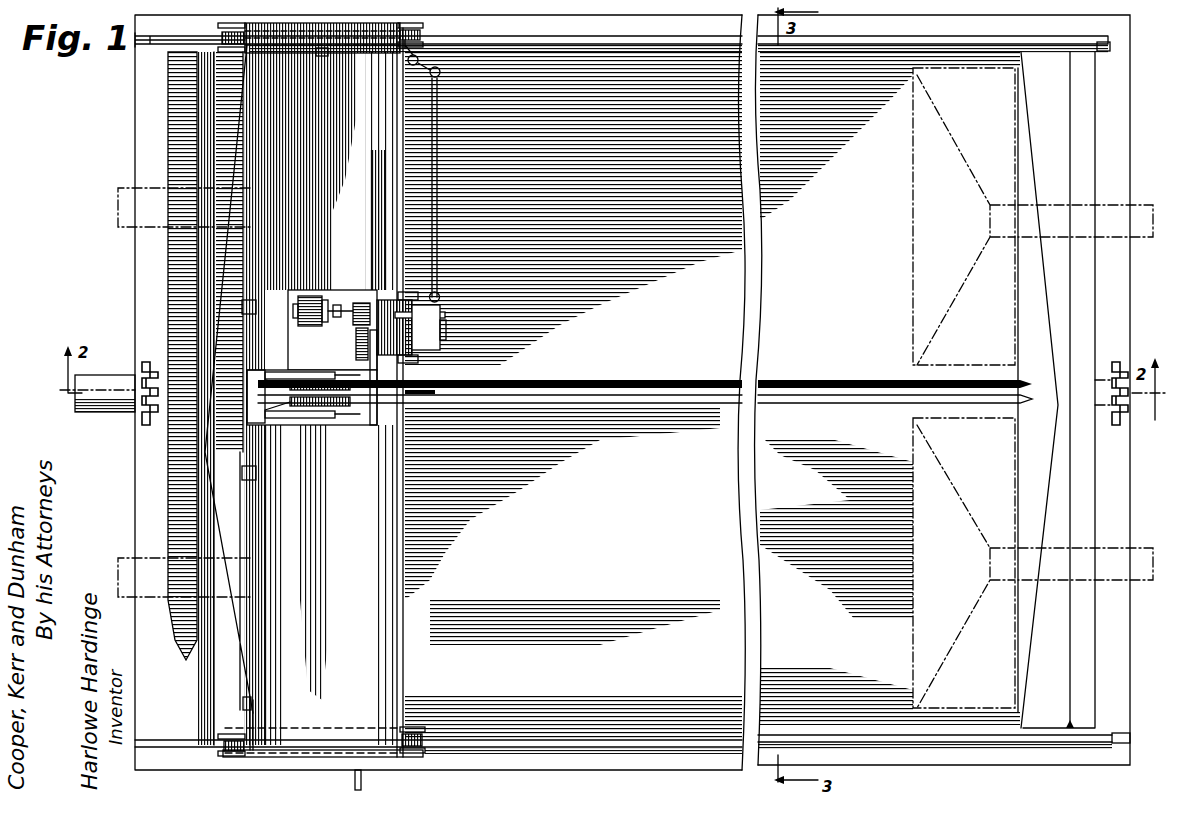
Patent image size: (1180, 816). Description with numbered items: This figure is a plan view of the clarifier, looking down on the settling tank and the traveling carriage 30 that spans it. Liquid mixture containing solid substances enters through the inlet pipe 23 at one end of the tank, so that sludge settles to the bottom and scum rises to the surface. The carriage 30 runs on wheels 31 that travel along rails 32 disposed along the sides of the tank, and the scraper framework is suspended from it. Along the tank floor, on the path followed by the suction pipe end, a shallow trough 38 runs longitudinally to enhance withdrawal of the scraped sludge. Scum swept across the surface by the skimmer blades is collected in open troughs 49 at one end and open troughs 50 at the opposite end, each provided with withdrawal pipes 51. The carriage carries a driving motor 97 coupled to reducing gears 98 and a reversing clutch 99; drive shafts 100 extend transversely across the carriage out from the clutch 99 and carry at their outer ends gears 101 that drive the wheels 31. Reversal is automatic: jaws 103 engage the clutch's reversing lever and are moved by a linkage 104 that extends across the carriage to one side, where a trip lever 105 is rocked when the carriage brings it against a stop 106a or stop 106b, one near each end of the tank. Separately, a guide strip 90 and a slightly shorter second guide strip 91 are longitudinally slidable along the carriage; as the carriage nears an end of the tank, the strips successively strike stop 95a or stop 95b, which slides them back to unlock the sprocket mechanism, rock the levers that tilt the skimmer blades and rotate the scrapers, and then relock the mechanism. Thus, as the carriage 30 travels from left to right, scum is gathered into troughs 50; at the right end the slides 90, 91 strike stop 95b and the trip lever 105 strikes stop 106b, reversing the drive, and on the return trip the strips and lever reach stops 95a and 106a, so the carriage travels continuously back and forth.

The inlet pipe 23 is at (98, 386).
The carriage 30 is at (238, 780).
The wheels 31 is at (222, 32).
The rails 32 is at (522, 41).
The shallow trough 38 is at (812, 380).
The open troughs 49 is at (250, 307).
The open troughs 50 is at (964, 388).
The withdrawal pipes 51 is at (118, 188).
The guide strip 90 is at (500, 395).
The second guide strip 91 is at (412, 398).
The stop 95a is at (143, 394).
The stop 95b is at (1124, 368).
The driving motor 97 is at (310, 297).
The reducing gears 98 is at (347, 328).
The reversing clutch 99 is at (392, 303).
The drive shafts 100 is at (397, 140).
The gears 101 is at (382, 54).
The jaws 103 is at (445, 338).
The linkage 104 is at (432, 168).
The trip lever 105 is at (440, 58).
The stop 106a is at (322, 56).
The stop 106b is at (1104, 51).